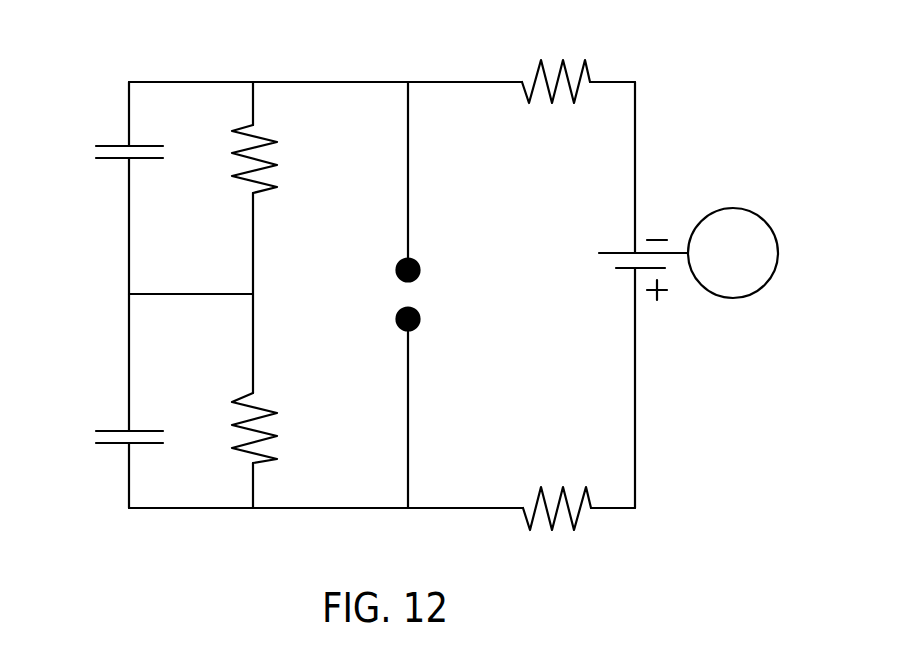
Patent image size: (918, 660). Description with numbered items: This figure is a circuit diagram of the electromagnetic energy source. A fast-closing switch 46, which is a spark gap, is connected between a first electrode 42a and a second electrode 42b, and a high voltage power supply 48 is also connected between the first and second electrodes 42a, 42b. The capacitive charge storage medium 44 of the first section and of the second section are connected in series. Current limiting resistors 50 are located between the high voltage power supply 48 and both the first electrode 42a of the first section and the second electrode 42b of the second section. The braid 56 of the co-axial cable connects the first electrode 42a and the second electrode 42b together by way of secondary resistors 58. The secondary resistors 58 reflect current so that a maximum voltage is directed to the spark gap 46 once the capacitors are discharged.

The first electrode 42a is at (129, 92).
The second electrode 42b is at (129, 468).
The capacitive charge storage medium 44 is at (108, 142).
The fast-closing switch 46 is at (408, 297).
The high voltage power supply 48 is at (735, 208).
The current limiting resistors 50 is at (578, 517).
The braid 56 is at (213, 82).
The secondary resistors 58 is at (267, 438).